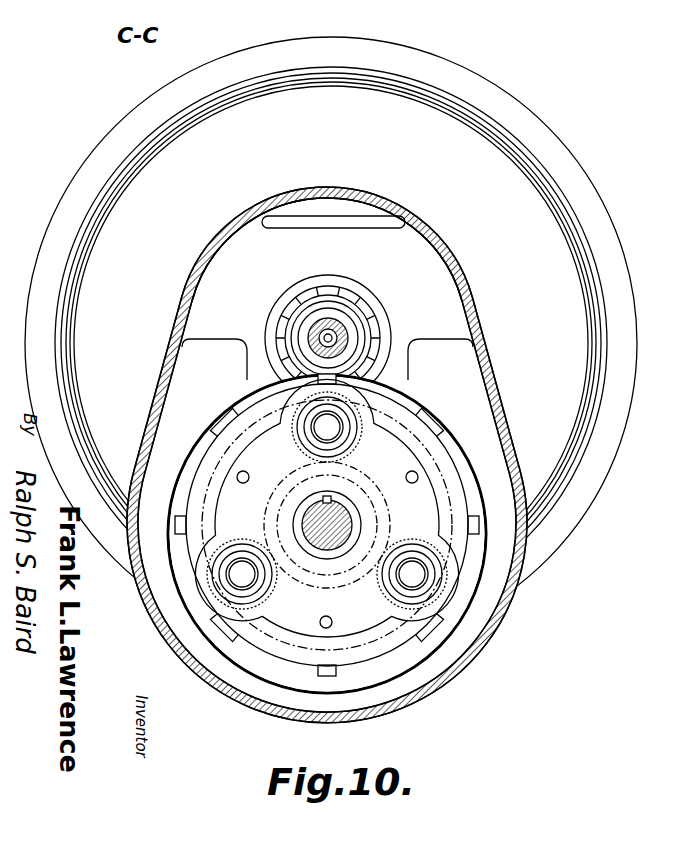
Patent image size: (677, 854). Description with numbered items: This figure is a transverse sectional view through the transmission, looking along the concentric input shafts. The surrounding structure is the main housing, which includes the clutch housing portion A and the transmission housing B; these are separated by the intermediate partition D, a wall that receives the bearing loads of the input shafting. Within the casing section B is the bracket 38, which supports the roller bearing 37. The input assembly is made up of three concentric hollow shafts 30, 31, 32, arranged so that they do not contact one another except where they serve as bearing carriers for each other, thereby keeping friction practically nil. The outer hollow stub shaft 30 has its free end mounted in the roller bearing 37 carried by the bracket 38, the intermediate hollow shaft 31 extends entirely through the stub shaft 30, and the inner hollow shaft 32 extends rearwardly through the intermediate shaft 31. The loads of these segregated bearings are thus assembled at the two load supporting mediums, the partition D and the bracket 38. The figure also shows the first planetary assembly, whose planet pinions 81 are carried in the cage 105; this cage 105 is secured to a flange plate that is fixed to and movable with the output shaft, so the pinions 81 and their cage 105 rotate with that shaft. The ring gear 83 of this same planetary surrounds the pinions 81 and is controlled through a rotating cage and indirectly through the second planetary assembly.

The clutch housing portion A is at (117, 168).
The transmission housing B is at (499, 384).
The intermediate partition D is at (194, 358).
The hollow stub shaft 30 is at (303, 318).
The intermediate hollow shaft 31 is at (357, 333).
The inner hollow shaft 32 is at (310, 335).
The roller bearing 37 is at (367, 313).
The bracket 38 is at (222, 267).
The planet pinions 81 is at (310, 428).
The ring gear 83 is at (267, 640).
The cage 105 is at (353, 617).